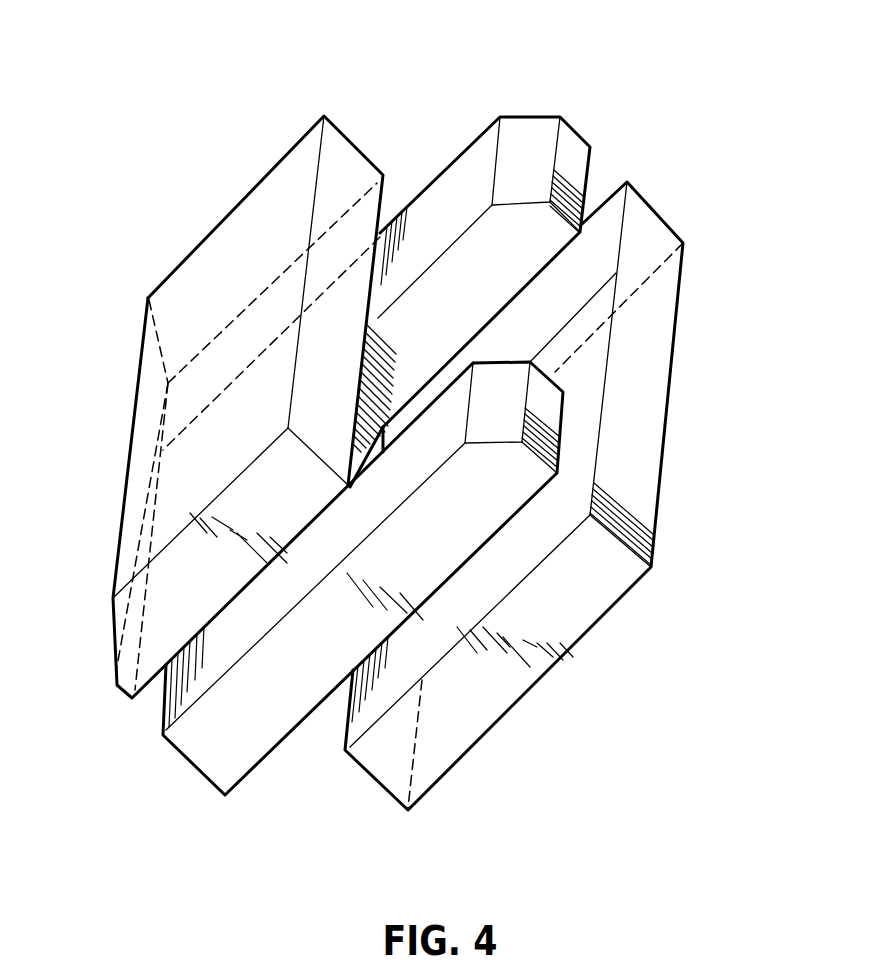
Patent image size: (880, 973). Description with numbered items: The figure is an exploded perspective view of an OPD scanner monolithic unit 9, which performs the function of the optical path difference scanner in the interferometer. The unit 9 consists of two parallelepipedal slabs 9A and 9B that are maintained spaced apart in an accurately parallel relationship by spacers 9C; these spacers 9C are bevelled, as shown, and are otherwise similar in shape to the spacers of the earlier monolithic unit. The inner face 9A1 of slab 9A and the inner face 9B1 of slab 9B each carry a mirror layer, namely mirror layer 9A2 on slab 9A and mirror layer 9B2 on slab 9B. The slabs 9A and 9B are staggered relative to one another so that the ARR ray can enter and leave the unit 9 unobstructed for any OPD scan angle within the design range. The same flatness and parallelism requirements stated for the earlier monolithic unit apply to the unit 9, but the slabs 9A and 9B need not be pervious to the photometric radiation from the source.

The OPD scanner monolithic unit 9 is at (690, 428).
The parallelepipedal slab 9A is at (263, 160).
The inner face of slab 9A 9A1 is at (379, 199).
The mirror layer 9A2 is at (182, 466).
The parallelepipedal slab 9B is at (677, 223).
The inner face of slab 9B 9B1 is at (611, 213).
The mirror layer 9B2 is at (582, 381).
The spacer 9C is at (545, 102).